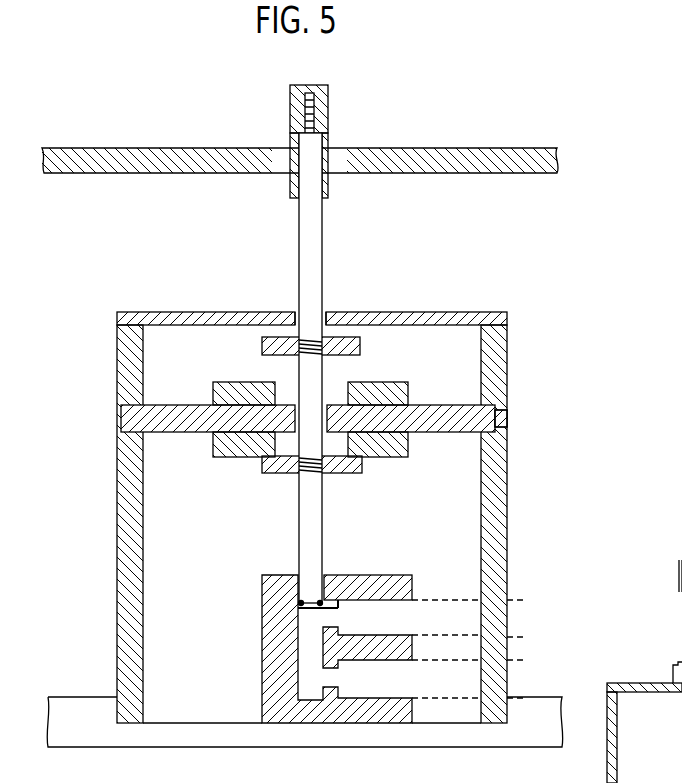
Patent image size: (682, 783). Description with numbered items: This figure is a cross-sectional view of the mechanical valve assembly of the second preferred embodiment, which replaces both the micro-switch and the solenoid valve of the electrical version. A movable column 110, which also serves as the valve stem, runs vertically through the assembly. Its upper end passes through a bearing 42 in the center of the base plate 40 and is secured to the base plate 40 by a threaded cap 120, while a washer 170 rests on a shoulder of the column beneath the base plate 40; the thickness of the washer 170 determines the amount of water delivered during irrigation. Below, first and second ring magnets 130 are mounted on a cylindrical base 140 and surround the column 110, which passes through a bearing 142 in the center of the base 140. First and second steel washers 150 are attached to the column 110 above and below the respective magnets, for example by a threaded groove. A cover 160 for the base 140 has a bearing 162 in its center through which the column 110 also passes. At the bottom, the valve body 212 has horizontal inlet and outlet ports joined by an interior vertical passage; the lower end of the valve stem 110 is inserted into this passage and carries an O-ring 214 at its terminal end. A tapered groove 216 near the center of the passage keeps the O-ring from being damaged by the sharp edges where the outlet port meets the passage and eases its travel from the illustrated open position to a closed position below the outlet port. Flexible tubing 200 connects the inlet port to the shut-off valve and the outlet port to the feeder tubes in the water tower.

The base plate 40 is at (455, 148).
The bearing 42 is at (273, 148).
The column 110 is at (318, 258).
The threaded cap 120 is at (330, 101).
The ring magnets 130 is at (426, 384).
The cylindrical base 140 is at (135, 578).
The bearing 142 is at (279, 405).
The steel washers 150 is at (360, 345).
The cover 160 is at (432, 312).
The bearing 162 is at (287, 312).
The washer 170 is at (327, 187).
The flexible tubing 200 is at (434, 635).
The valve body 212 is at (277, 647).
The O-ring 214 is at (332, 584).
The tapered groove 216 is at (300, 605).